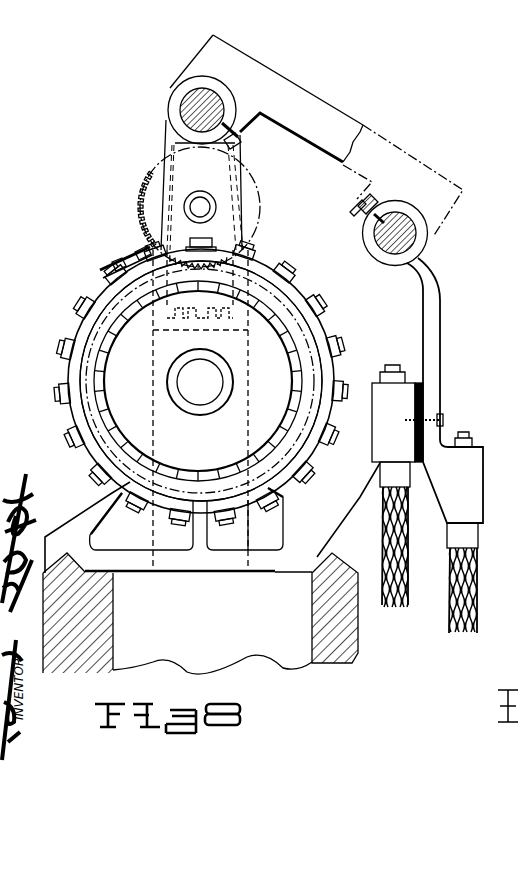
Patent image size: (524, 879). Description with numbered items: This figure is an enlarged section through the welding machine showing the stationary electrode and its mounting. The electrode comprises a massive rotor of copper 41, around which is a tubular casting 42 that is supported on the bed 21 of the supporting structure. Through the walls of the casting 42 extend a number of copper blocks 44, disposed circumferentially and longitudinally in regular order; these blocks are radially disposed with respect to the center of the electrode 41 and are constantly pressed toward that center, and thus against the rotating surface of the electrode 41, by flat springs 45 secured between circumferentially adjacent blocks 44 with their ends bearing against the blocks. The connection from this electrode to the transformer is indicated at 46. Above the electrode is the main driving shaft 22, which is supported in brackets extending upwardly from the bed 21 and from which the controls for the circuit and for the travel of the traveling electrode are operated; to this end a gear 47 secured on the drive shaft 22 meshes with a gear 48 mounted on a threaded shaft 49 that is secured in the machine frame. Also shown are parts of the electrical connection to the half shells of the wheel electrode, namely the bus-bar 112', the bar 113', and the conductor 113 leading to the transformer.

The bed 21 is at (108, 616).
The main driving shaft 22 is at (214, 383).
The rotor of copper 41 is at (125, 368).
The tubular casting 42 is at (325, 378).
The copper blocks 44 is at (76, 305).
The flat springs 45 is at (112, 264).
The connection to the transformer 46 is at (380, 437).
The gear 47 is at (310, 330).
The gear 48 is at (258, 206).
The threaded shaft 49 is at (200, 208).
The bus-bar 112' is at (175, 112).
The bar 113' is at (447, 403).
The conductor 113 is at (453, 560).